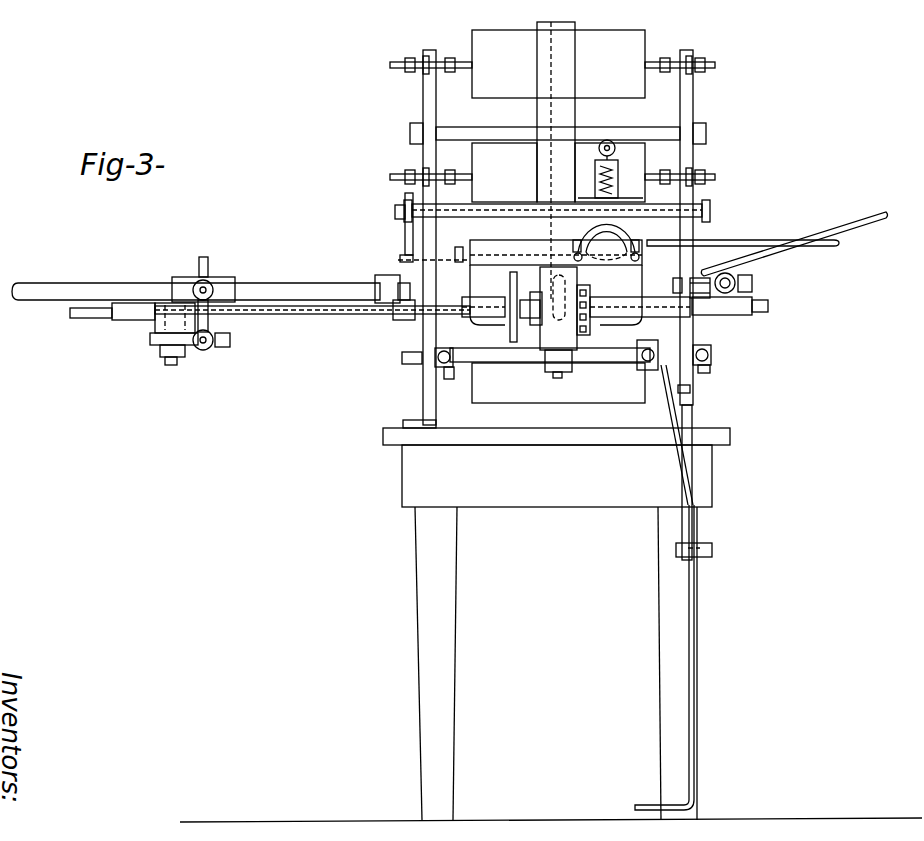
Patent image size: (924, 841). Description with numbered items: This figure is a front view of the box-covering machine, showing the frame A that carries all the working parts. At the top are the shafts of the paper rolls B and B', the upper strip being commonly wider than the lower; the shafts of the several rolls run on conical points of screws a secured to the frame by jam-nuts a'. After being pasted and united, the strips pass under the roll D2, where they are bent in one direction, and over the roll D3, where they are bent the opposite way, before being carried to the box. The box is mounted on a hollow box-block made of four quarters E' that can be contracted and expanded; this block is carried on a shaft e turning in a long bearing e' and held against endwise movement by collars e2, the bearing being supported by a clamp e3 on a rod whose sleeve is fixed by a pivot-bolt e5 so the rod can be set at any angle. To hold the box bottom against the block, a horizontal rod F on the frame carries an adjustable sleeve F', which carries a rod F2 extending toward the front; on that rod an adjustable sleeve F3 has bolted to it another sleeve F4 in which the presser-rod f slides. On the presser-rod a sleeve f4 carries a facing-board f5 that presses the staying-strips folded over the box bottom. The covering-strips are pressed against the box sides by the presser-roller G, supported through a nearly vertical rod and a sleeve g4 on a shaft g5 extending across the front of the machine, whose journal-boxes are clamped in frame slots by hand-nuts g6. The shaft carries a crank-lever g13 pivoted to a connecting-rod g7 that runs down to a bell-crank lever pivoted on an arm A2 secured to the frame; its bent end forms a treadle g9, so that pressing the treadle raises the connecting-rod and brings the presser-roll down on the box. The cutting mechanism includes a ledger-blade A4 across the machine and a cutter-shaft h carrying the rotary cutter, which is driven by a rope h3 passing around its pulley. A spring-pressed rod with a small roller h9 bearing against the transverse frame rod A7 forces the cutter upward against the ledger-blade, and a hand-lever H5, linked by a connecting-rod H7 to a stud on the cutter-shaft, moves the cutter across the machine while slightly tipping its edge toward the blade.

The frame A is at (556, 239).
The arm A2 is at (712, 535).
The ledger-blade A4 is at (557, 208).
The transverse rod A7 is at (558, 129).
The screws a is at (557, 210).
The jam-nuts a' is at (559, 112).
The upper roll of paper B is at (556, 112).
The under roll of paper B' is at (527, 161).
The roll D2 is at (558, 383).
The roll D3 is at (558, 64).
The quarters or corner-pieces E' is at (615, 308).
The shaft e is at (771, 299).
The long bearing e' is at (722, 320).
The collars e2 is at (692, 315).
The clamp e3 is at (752, 278).
The pivot-bolt e5 is at (668, 278).
The horizontal rod F is at (206, 282).
The sleeve F' is at (197, 278).
The rod F2 is at (215, 330).
The sleeve F3 is at (197, 352).
The sleeve F4 is at (128, 318).
The presser-rod f is at (330, 314).
The sleeve f4 is at (478, 297).
The facing-board f5 is at (518, 268).
The presser-roller G is at (520, 279).
The sleeve g4 is at (564, 368).
The shaft g5 is at (550, 358).
The hand-nuts g6 is at (452, 380).
The connecting-rod g7 is at (674, 582).
The treadle g9 is at (664, 795).
The crank-lever g13 is at (655, 340).
The hand-lever H5 is at (794, 240).
The connecting-rod H7 is at (743, 232).
The shaft h is at (606, 242).
The rope h3 is at (615, 179).
The small roller h9 is at (616, 150).